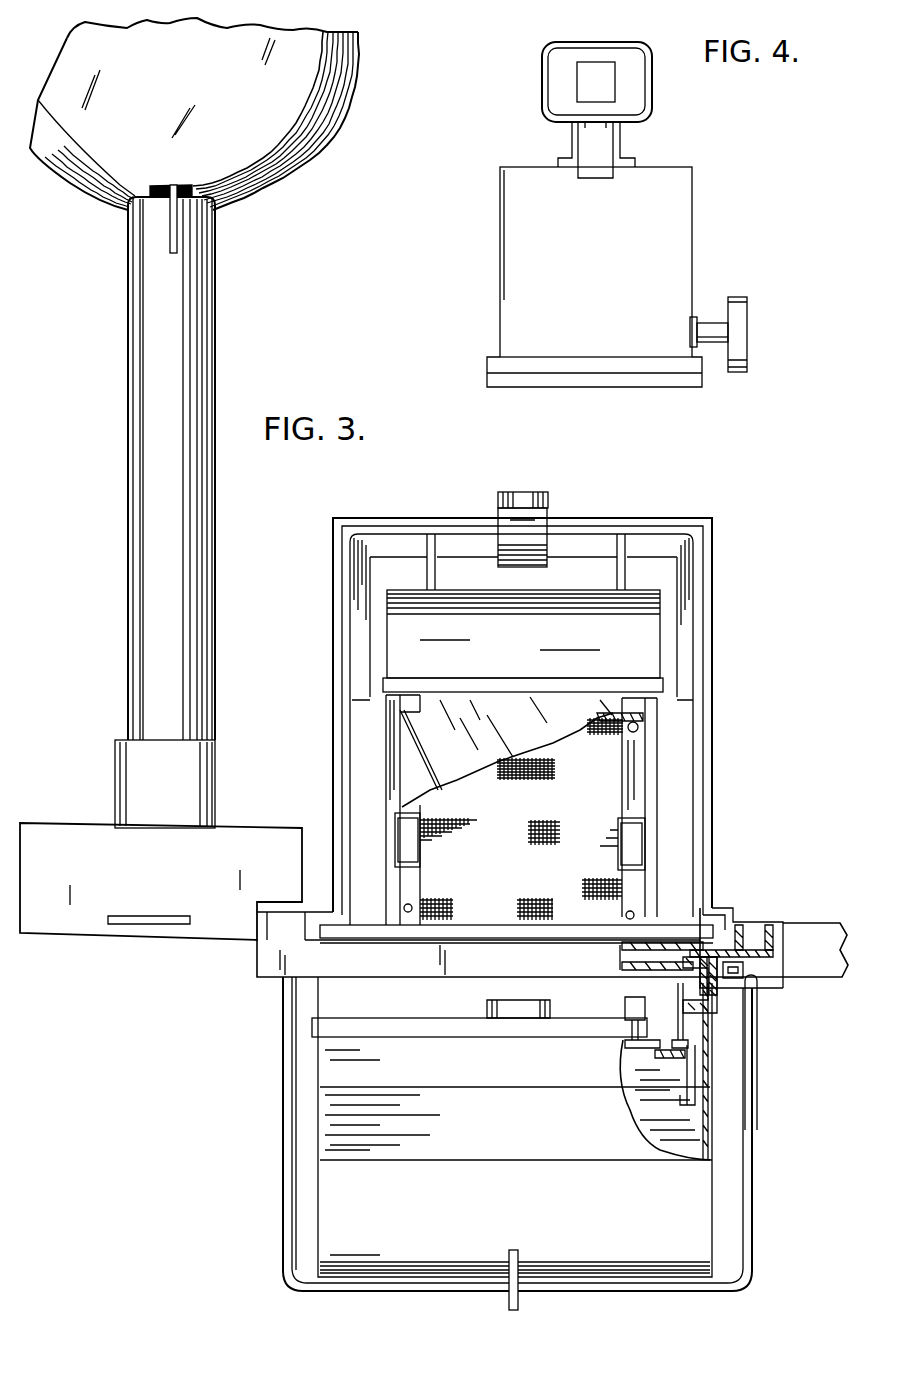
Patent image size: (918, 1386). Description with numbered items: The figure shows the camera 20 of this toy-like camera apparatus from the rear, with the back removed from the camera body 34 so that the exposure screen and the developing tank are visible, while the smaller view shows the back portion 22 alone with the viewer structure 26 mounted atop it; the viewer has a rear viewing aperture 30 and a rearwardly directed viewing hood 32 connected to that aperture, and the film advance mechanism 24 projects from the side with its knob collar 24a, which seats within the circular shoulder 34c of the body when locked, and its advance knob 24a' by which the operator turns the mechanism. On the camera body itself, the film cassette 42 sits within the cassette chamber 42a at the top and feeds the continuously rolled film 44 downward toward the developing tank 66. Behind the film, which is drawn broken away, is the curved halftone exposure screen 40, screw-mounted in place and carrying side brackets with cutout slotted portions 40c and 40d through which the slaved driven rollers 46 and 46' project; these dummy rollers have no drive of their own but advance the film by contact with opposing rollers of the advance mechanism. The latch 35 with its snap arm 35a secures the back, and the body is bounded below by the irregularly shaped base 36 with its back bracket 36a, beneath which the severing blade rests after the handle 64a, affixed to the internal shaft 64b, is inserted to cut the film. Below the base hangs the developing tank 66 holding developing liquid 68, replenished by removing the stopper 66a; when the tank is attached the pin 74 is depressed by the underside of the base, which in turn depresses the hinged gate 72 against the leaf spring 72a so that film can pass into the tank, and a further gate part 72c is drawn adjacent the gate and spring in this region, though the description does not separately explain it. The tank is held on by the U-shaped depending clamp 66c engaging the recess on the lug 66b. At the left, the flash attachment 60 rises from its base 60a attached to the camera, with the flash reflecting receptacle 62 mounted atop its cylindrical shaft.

In FIG. 4, the camera 20 is at (731, 150).
In FIG. 4, the back portion 22 is at (690, 215).
In FIG. 4, the film advance mechanism 24 is at (749, 344).
In FIG. 4, the knob collar 24a is at (720, 305).
In FIG. 4, the advance knob 24a' is at (769, 295).
In FIG. 4, the viewer structure 26 is at (538, 102).
In FIG. 4, the rear viewing aperture 30 is at (612, 92).
In FIG. 4, the viewing hood 32 is at (652, 103).
In FIG. 3, the camera body 34 is at (726, 563).
In FIG. 4, the circular shoulder 34c is at (690, 325).
In FIG. 3, the latch 35 is at (528, 494).
In FIG. 3, the snap arm 35a is at (520, 545).
In FIG. 3, the base 36 is at (662, 946).
In FIG. 3, the back bracket 36a is at (478, 930).
In FIG. 3, the exposure screen 40 is at (572, 805).
In FIG. 3, the cutout slotted portion 40c is at (420, 820).
In FIG. 3, the cutout slotted portion 40d is at (622, 835).
In FIG. 3, the film cassette 42 is at (468, 600).
In FIG. 3, the cassette chamber 42a is at (572, 560).
In FIG. 3, the film 44 is at (462, 702).
In FIG. 3, the driven roller 46 is at (649, 834).
In FIG. 3, the driven roller 46' is at (386, 835).
In FIG. 3, the flash attachment 60 is at (207, 354).
In FIG. 3, the base 60a is at (42, 830).
In FIG. 3, the flash reflecting receptacle 62 is at (313, 146).
In FIG. 3, the handle 64a is at (580, 930).
In FIG. 3, the internal shaft 64b is at (826, 925).
In FIG. 3, the developing tank 66 is at (325, 1193).
In FIG. 3, the stopper 66a is at (487, 1010).
In FIG. 3, the lug 66b is at (518, 1268).
In FIG. 3, the U-shaped depending clamp 66c is at (285, 1130).
In FIG. 3, the developing liquid 68 is at (660, 1115).
In FIG. 3, the hinged gate 72 is at (700, 1082).
In FIG. 3, the leaf spring 72a is at (655, 1056).
In FIG. 3, the valve stem 72c is at (633, 1016).
In FIG. 3, the pin 74 is at (660, 985).